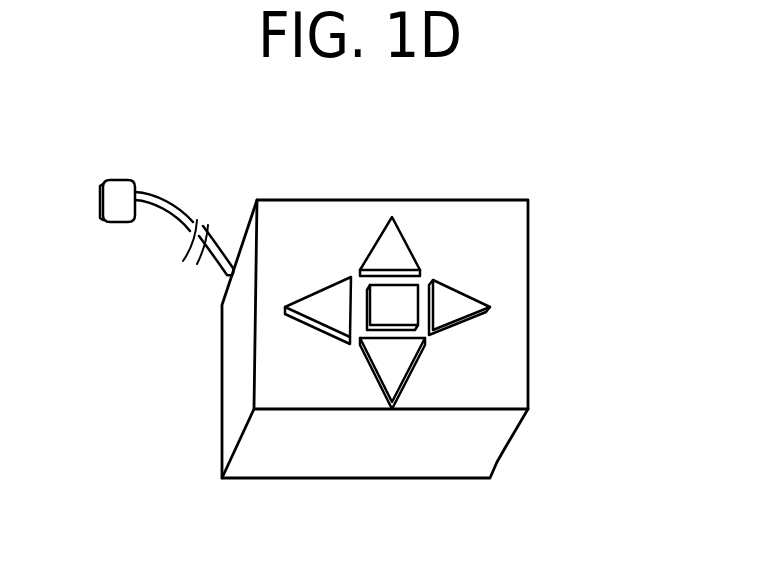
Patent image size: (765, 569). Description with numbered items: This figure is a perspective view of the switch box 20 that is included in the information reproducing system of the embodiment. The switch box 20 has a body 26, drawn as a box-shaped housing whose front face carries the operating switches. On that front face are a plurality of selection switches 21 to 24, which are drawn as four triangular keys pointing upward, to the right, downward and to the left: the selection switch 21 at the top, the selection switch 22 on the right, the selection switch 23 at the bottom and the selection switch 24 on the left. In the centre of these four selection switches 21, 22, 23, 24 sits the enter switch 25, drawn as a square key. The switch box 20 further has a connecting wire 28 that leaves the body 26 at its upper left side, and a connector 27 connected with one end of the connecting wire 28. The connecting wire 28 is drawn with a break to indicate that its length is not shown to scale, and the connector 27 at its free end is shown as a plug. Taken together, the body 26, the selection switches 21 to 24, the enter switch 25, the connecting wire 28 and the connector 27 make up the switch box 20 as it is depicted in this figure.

The switch box 20 is at (523, 184).
The selection switch 21 is at (393, 242).
The selection switch 22 is at (470, 307).
The selection switch 23 is at (396, 382).
The selection switch 24 is at (317, 307).
The enter switch 25 is at (407, 292).
The body 26 is at (530, 207).
The connector 27 is at (134, 186).
The connecting wire 28 is at (167, 217).